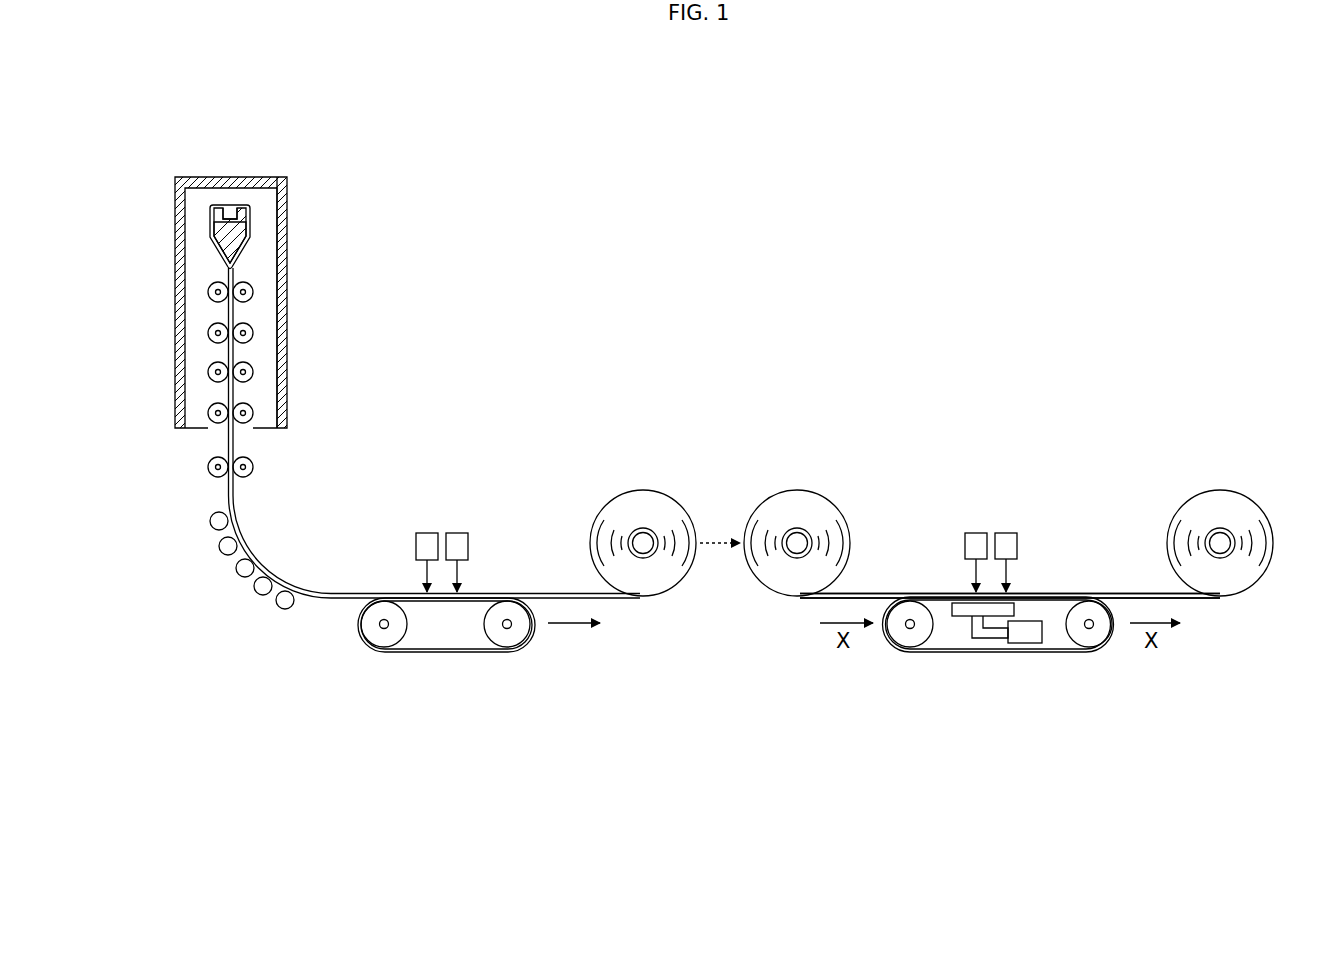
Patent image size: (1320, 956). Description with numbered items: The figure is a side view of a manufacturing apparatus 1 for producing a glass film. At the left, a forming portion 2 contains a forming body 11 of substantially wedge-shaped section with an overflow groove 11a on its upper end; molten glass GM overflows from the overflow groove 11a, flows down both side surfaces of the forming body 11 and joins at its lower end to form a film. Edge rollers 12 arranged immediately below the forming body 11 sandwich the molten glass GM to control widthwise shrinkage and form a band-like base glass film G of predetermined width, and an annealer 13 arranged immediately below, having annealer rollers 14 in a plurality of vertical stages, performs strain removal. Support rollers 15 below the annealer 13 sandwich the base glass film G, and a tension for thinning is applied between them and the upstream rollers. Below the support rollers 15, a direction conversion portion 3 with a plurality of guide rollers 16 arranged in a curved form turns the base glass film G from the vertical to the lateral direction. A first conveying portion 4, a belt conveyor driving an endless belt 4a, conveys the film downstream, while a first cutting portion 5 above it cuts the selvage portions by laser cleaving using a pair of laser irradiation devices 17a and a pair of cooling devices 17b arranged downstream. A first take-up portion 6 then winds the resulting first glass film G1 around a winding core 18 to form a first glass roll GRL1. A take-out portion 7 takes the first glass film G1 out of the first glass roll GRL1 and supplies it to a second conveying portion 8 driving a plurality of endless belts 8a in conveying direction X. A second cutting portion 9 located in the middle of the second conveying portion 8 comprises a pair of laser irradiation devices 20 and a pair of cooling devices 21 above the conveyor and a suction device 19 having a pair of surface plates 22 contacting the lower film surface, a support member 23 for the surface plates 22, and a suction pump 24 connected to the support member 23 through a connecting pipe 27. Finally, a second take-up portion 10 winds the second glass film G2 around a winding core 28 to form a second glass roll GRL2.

The manufacturing apparatus 1 is at (838, 157).
The forming portion 2 is at (302, 223).
The direction conversion portion 3 is at (275, 534).
The first conveying portion 4 is at (446, 661).
The belt 4a is at (468, 655).
The first cutting portion 5 is at (440, 496).
The first take-up portion 6 is at (720, 535).
The take-out portion 7 is at (774, 478).
The second conveying portion 8 is at (998, 661).
The belts 8a is at (1065, 655).
The second cutting portion 9 is at (987, 504).
The second take-up portion 10 is at (1221, 534).
The forming body 11 is at (210, 245).
The overflow groove 11a is at (236, 205).
The edge rollers 12 is at (254, 292).
The annealer 13 is at (268, 408).
The annealer rollers 14 is at (207, 335).
The support rollers 15 is at (254, 467).
The guide rollers 16 is at (256, 587).
The laser irradiation devices 17a is at (421, 530).
The cooling devices 17b is at (462, 530).
The winding core 18 is at (650, 528).
The suction device 19 is at (994, 676).
The laser irradiation devices 20 is at (975, 530).
The cooling devices 21 is at (1008, 530).
The surface plates 22 is at (931, 594).
The support member 23 is at (958, 617).
The suction pump 24 is at (1027, 644).
The connecting pipe 27 is at (998, 640).
The winding core 28 is at (1228, 528).
The base glass film G is at (243, 350).
The first glass film G1 is at (567, 592).
The second glass film G2 is at (1133, 592).
The molten glass GM is at (222, 205).
The first glass roll GRL1 is at (653, 578).
The second glass roll GRL2 is at (1230, 578).